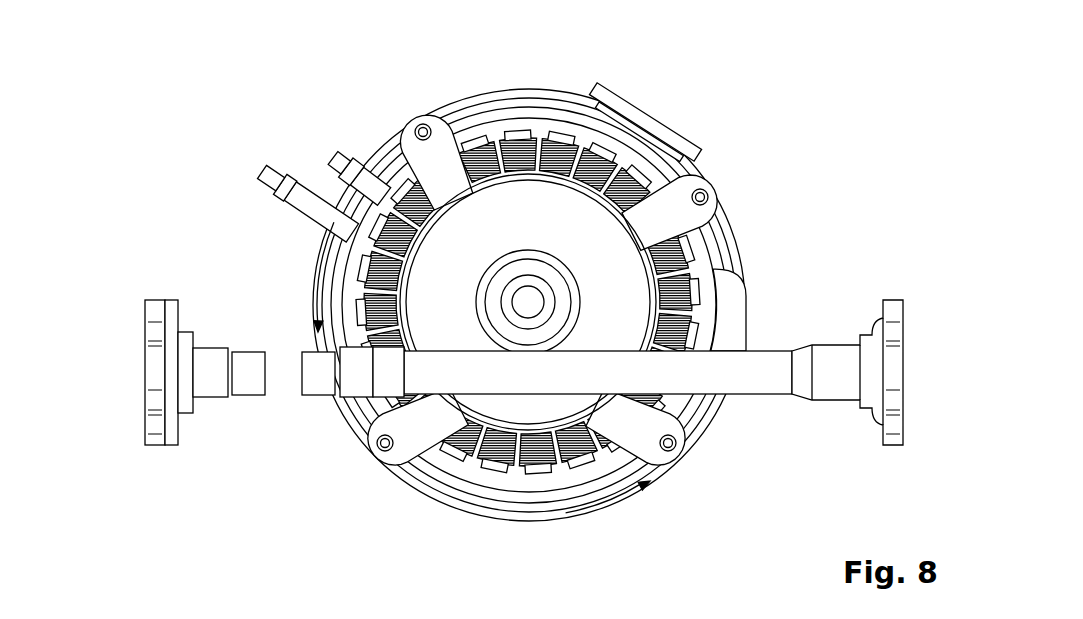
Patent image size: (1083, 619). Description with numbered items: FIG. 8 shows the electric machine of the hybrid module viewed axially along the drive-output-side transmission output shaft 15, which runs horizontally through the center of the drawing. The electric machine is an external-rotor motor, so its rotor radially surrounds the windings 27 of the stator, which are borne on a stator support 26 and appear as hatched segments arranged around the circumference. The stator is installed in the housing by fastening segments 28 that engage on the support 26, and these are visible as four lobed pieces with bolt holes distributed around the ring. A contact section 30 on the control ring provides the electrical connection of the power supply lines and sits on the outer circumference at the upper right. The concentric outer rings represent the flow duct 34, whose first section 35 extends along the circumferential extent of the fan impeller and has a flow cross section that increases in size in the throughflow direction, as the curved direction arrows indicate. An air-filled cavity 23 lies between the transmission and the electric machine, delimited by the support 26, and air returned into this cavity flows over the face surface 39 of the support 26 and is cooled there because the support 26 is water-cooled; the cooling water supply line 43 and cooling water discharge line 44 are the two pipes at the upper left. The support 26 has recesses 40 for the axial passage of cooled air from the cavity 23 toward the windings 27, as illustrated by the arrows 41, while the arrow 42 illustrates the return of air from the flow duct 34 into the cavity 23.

The transmission output shaft 15 is at (770, 385).
The air-filled cavity 23 is at (597, 262).
The stator support 26 is at (607, 230).
The windings 27 is at (598, 160).
The fastening segments 28 is at (412, 147).
The contact section 30 is at (673, 145).
The flow duct 34 is at (494, 92).
The first section of the flow duct 35 is at (529, 305).
The face surface 39 is at (471, 218).
The recesses 40 is at (580, 190).
The arrows 41 is at (519, 152).
The arrow 42 is at (650, 318).
The cooling water supply line 43 is at (340, 163).
The cooling water discharge line 44 is at (263, 175).